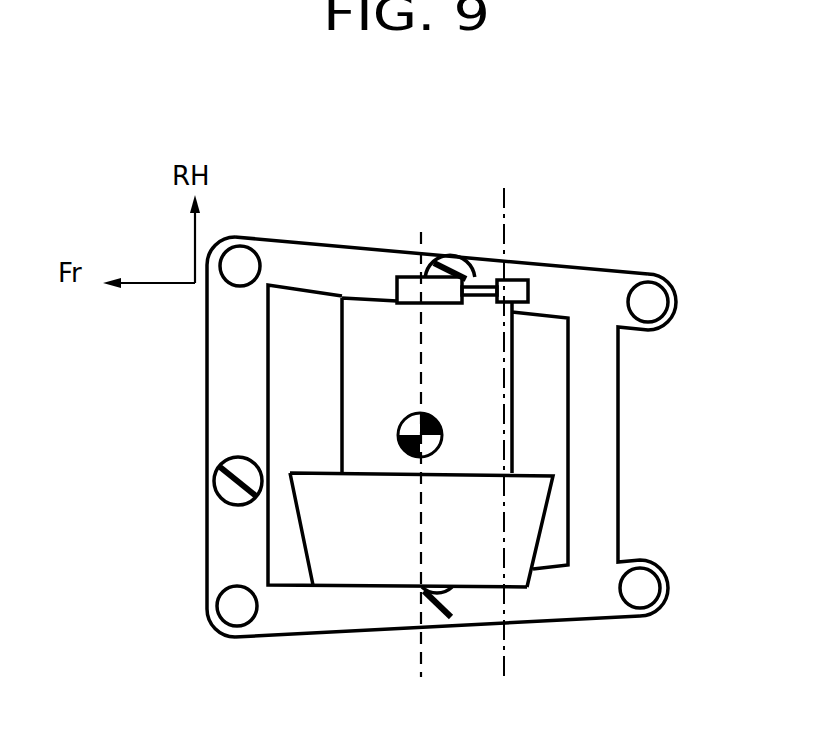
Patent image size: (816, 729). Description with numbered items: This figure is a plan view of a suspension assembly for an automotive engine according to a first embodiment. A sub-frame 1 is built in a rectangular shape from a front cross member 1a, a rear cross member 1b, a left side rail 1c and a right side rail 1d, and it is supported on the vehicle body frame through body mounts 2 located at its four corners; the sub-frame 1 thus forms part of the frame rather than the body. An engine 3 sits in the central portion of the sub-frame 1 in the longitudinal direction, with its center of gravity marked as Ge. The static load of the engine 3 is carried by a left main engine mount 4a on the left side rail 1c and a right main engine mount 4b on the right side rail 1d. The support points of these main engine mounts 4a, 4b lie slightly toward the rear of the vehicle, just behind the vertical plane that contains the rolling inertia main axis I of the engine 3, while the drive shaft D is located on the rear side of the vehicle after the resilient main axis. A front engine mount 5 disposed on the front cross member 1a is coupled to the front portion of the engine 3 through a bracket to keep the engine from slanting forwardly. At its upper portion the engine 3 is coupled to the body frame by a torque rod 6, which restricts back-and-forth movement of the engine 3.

The sub-frame 1 is at (304, 237).
The front cross member 1a is at (227, 537).
The rear cross member 1b is at (597, 497).
The left side rail 1c is at (303, 610).
The right side rail 1d is at (351, 262).
The body mounts 2 is at (240, 262).
The engine 3 is at (513, 379).
The left main engine mount 4a is at (453, 620).
The right main engine mount 4b is at (472, 257).
The front engine mount 5 is at (213, 493).
The torque rod 6 is at (528, 282).
The center of gravity of the engine Ge is at (398, 417).
The drive shaft D is at (512, 207).
The rolling inertia main axis I is at (417, 635).